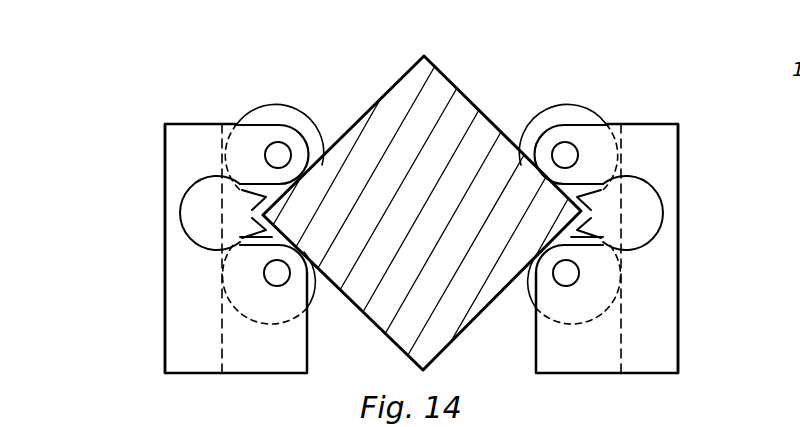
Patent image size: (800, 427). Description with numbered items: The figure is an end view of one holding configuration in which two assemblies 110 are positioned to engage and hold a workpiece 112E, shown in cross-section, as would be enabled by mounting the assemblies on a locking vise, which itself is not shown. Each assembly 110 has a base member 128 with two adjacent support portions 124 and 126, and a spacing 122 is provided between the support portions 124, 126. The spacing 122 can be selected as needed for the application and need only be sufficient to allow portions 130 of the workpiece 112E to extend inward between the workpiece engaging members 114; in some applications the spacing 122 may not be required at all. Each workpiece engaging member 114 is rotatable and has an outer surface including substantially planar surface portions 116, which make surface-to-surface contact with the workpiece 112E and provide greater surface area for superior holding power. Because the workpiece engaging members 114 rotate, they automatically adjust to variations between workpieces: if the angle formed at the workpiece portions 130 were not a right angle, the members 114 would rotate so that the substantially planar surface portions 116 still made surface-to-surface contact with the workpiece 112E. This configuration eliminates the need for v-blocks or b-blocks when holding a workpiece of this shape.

The holding assembly 110 is at (206, 125).
The workpiece 112E is at (440, 97).
The workpiece engaging member 114 is at (264, 113).
The substantially planar surface portion 116 is at (318, 135).
The spacing 122 is at (223, 207).
The support portion 124 is at (258, 137).
The support portion 126 is at (255, 263).
The base member 128 is at (165, 170).
The workpiece portion 130 is at (282, 218).